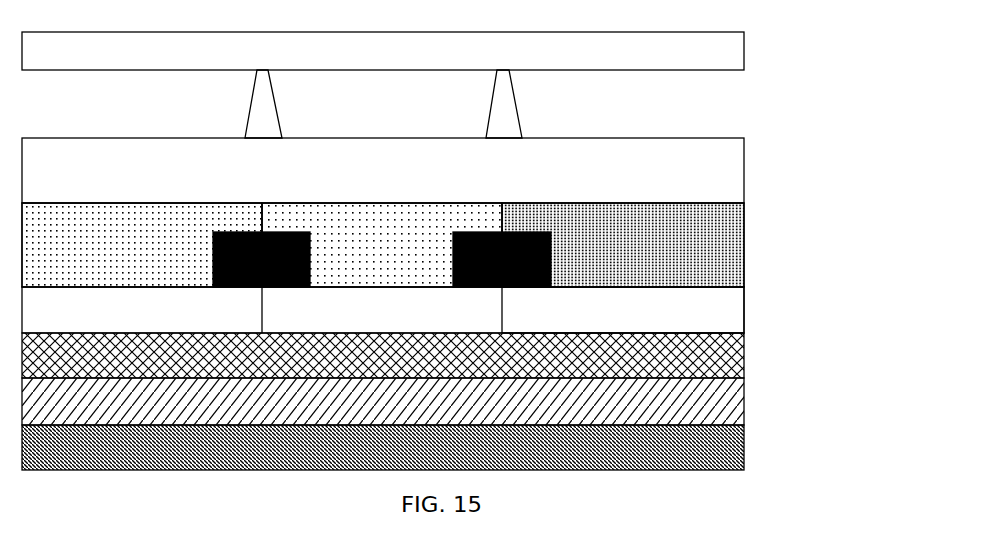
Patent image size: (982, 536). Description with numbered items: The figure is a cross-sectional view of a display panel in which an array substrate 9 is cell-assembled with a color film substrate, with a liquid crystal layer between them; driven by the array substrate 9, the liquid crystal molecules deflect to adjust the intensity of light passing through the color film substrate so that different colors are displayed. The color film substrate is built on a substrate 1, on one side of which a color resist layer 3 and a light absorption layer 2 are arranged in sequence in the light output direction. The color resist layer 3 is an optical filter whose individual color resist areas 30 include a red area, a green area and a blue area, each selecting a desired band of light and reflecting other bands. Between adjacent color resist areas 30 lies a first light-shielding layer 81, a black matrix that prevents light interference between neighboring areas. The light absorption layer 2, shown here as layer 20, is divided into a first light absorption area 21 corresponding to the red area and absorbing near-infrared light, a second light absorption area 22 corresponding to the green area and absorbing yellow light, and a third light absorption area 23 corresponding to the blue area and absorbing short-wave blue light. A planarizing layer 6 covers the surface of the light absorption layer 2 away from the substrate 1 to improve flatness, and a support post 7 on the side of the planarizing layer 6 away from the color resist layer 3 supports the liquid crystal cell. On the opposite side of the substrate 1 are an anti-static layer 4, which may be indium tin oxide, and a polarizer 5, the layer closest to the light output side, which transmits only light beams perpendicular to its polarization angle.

The array substrate 9 is at (741, 54).
The support post 7 is at (518, 108).
The planarizing layer 6 is at (744, 160).
The first light-shielding layer 81 is at (551, 232).
The color resist layer 3 is at (437, 245).
The color resist area 30 is at (744, 248).
The light absorption layer 2 is at (437, 268).
The light emitting layer 20 is at (383, 310).
The first light absorption area 21 is at (181, 268).
The second light absorption area 22 is at (436, 268).
The third light absorption area 23 is at (623, 310).
The substrate 1 is at (744, 356).
The anti-static layer 4 is at (744, 400).
The polarizer 5 is at (744, 452).